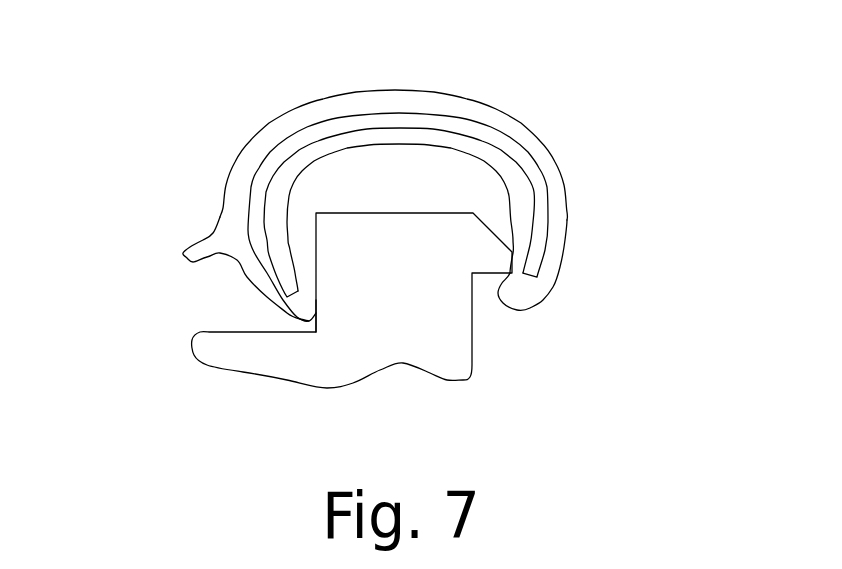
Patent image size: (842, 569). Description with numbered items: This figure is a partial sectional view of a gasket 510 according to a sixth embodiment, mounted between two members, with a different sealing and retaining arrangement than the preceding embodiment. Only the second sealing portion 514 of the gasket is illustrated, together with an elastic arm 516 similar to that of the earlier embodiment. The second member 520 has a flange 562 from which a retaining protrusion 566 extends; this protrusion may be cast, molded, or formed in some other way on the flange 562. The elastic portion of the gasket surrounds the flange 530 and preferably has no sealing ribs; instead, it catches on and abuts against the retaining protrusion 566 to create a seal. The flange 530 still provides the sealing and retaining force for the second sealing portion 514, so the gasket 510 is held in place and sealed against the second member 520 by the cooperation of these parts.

The gasket 510 is at (378, 192).
The second sealing portion 514 is at (587, 137).
The elastic arm 516 is at (193, 241).
The second member 520 is at (243, 372).
The flange 530 is at (358, 118).
The flange 562 is at (314, 327).
The retaining protrusion 566 is at (490, 275).